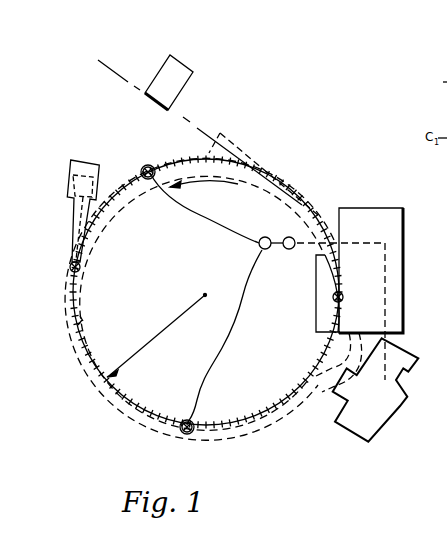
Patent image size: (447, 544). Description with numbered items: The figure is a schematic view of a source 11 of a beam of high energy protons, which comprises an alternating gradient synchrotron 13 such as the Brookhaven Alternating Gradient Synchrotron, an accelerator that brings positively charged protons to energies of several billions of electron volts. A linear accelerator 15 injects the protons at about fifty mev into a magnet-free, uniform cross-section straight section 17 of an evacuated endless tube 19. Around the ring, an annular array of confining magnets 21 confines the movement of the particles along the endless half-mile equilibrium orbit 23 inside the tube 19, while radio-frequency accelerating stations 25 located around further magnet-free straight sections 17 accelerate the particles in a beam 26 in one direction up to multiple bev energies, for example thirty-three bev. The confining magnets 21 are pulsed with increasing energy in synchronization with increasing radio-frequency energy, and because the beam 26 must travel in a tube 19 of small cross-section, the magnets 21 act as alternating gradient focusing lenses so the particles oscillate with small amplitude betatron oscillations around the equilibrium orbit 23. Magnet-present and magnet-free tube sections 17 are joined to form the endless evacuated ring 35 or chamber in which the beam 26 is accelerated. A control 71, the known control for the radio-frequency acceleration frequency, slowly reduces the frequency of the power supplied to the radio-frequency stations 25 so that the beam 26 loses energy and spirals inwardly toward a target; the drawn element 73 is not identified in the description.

The source of a beam of high energy protons 11 is at (221, 120).
The alternating gradient synchrotron 13 is at (287, 181).
The linear accelerator 15 is at (71, 170).
The straight section 17 is at (152, 168).
The evacuated endless tube 19 is at (88, 364).
The confining magnets 21 is at (313, 210).
The equilibrium orbit 23 is at (103, 222).
The radio-frequency accelerating stations 25 is at (145, 167).
The beam 26 is at (318, 366).
The endless evacuated ring 35 is at (82, 321).
The control 71 is at (265, 237).
The guide roller 73 is at (290, 249).